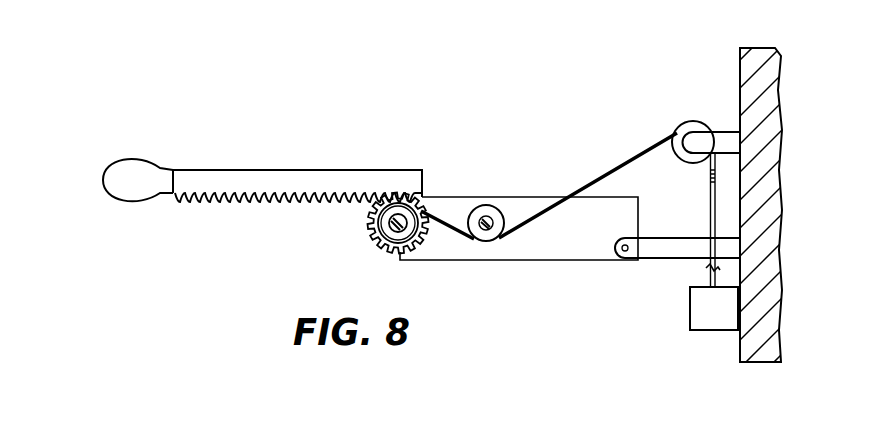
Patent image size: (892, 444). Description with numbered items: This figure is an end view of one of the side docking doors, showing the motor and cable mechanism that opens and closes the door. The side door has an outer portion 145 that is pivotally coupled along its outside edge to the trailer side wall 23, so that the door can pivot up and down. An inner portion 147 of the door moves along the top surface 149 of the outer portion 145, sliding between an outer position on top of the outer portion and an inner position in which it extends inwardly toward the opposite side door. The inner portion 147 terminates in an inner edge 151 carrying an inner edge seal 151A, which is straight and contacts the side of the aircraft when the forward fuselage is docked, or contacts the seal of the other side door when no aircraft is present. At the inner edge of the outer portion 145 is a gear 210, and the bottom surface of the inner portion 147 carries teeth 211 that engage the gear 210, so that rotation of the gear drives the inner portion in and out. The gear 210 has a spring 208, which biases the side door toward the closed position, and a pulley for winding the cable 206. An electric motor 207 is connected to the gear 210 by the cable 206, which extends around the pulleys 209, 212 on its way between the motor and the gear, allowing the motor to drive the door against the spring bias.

The trailer side wall 23 is at (747, 67).
The outer portion 145 is at (434, 197).
The inner portion 147 is at (306, 170).
The top surface 149 is at (497, 197).
The inner edge 151 is at (174, 170).
The inner edge seal 151A is at (117, 160).
The cable 206 is at (715, 217).
The electric motor 207 is at (690, 303).
The spring 208 is at (393, 252).
The pulley 209 is at (687, 121).
The gear 210 is at (370, 228).
The teeth 211 is at (233, 198).
The pulley 212 is at (478, 204).